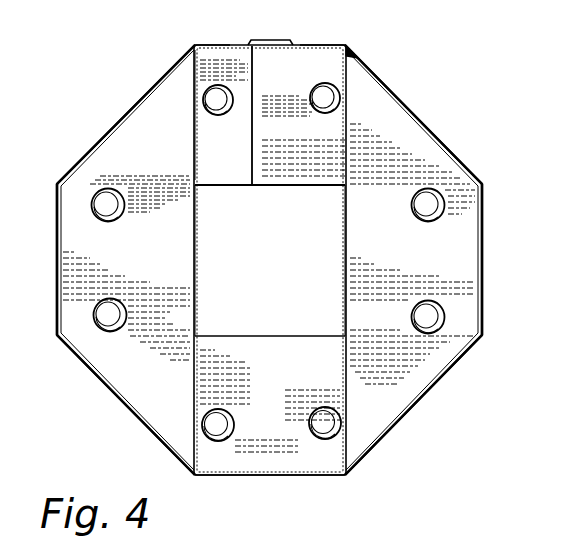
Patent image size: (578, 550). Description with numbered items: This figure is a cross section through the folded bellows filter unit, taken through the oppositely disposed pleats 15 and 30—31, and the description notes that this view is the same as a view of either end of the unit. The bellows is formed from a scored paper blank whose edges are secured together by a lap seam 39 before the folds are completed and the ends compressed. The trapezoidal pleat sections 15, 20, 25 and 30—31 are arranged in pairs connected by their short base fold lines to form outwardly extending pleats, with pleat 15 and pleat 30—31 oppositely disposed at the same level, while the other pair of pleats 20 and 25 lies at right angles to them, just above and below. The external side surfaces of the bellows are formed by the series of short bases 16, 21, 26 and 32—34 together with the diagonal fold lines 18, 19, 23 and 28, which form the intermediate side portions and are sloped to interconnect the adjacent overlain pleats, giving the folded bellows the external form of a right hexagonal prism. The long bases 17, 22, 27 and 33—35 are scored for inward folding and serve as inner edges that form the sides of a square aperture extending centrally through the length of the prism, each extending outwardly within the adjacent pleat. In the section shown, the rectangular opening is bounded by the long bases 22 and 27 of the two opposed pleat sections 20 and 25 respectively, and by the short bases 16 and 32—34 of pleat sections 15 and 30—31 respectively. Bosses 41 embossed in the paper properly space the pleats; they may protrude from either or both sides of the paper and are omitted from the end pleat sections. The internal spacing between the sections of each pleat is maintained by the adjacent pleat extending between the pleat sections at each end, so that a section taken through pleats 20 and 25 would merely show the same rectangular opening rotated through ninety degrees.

The trapezoidal pleat section 15 is at (245, 460).
The short base 16 is at (267, 477).
The long base 17 is at (282, 336).
The diagonal fold line 18 is at (415, 386).
The diagonal fold line 19 is at (122, 402).
The trapezoidal pleat section 20 is at (80, 243).
The short base 21 is at (60, 300).
The long base 22 is at (197, 263).
The diagonal fold line 23 is at (118, 124).
The trapezoidal pleat section 25 is at (462, 250).
The short base 26 is at (482, 310).
The long base 27 is at (345, 270).
The diagonal fold line 28 is at (440, 137).
The trapezoidal pleat section 30 is at (196, 112).
The trapezoidal pleat section 31 is at (355, 59).
The short base 32 is at (197, 46).
The long base 33 is at (228, 188).
The short base 34 is at (320, 45).
The long base 35 is at (320, 188).
The lap seam 39 is at (268, 188).
The bosses 41 is at (309, 416).